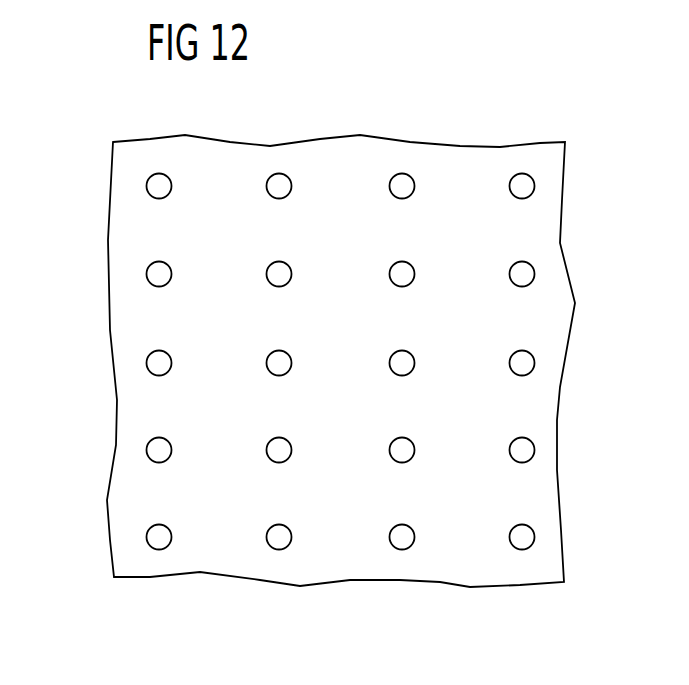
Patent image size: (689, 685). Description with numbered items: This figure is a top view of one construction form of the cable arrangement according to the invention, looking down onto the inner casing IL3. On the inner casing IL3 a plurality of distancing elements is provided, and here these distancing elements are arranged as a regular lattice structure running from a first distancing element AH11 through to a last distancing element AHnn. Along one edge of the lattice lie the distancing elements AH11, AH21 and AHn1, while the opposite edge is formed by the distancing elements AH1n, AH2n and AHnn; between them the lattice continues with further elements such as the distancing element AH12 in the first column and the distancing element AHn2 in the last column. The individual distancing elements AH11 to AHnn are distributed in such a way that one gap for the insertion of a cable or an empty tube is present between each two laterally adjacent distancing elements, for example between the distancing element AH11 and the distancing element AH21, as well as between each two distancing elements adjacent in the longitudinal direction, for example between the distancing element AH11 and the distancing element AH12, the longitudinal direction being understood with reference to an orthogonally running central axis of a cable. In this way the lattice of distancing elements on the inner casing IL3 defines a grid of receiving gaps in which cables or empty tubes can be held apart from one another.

The inner casing IL3 is at (430, 160).
The distancing element AH1n is at (160, 180).
The distancing element AH2n is at (283, 180).
The distancing element AHnn is at (523, 180).
The distancing element AH12 is at (153, 450).
The distancing element AHn2 is at (527, 452).
The distancing element AH11 is at (160, 537).
The distancing element AH21 is at (282, 537).
The distancing element AHn1 is at (522, 540).